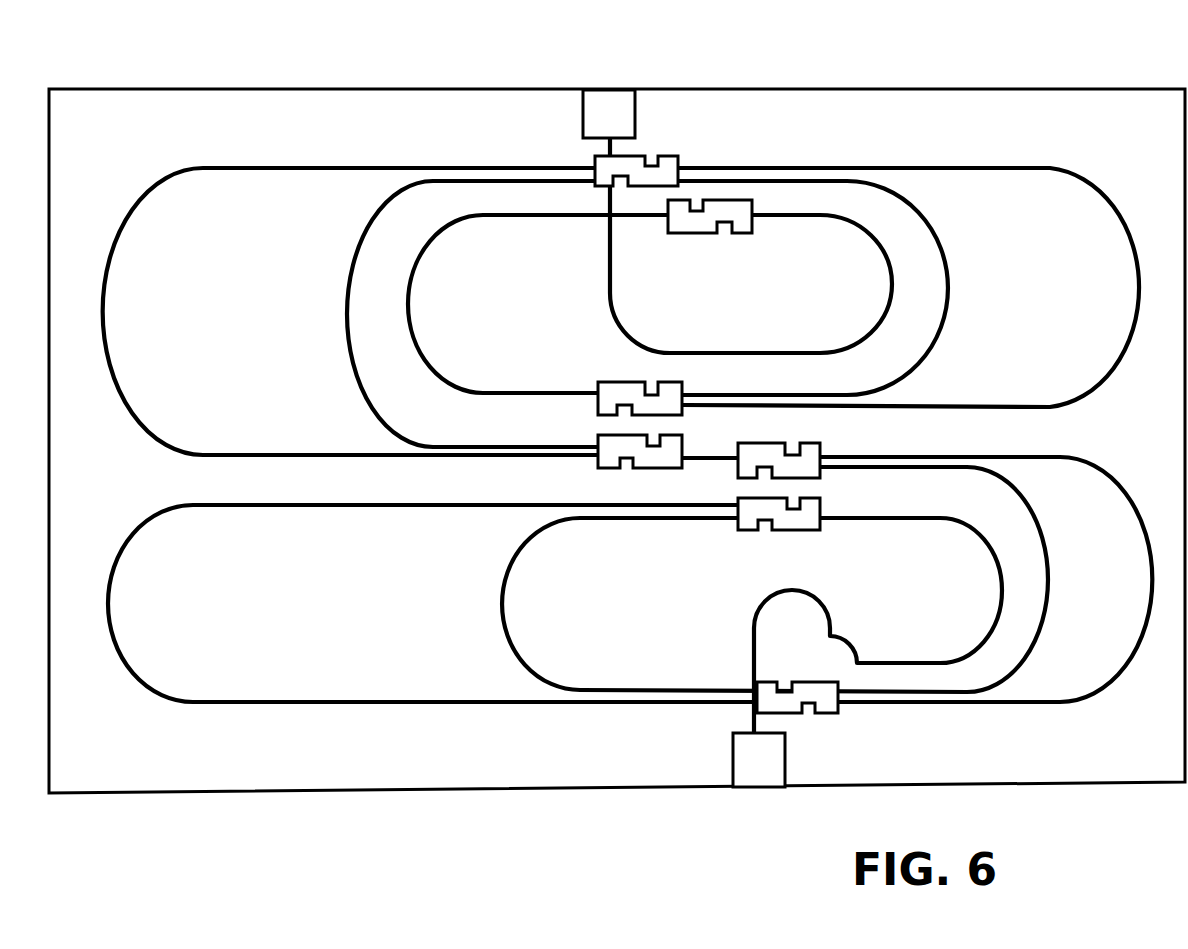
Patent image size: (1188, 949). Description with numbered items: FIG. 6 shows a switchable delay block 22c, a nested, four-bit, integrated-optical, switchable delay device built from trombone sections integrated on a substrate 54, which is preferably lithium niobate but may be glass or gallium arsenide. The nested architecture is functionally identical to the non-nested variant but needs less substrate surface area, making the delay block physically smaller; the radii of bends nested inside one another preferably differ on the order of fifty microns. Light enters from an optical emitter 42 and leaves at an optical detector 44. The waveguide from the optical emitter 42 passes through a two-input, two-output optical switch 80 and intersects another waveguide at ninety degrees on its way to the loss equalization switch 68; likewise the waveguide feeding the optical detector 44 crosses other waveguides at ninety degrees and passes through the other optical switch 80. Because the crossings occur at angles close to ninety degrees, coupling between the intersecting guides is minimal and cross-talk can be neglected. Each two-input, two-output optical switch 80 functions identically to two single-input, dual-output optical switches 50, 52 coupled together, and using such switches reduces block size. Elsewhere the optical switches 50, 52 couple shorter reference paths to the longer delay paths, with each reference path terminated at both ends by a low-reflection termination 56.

The switchable delay block 22c is at (617, 428).
The optical emitter 42 is at (583, 112).
The optical detector 44 is at (733, 760).
The substrate 54 is at (297, 793).
The optical switch 80 is at (666, 155).
The loss equalization switch 68 is at (735, 234).
The optical switch 50 is at (620, 382).
The optical switch 52 is at (655, 469).
The low-reflection termination 56 is at (668, 232).